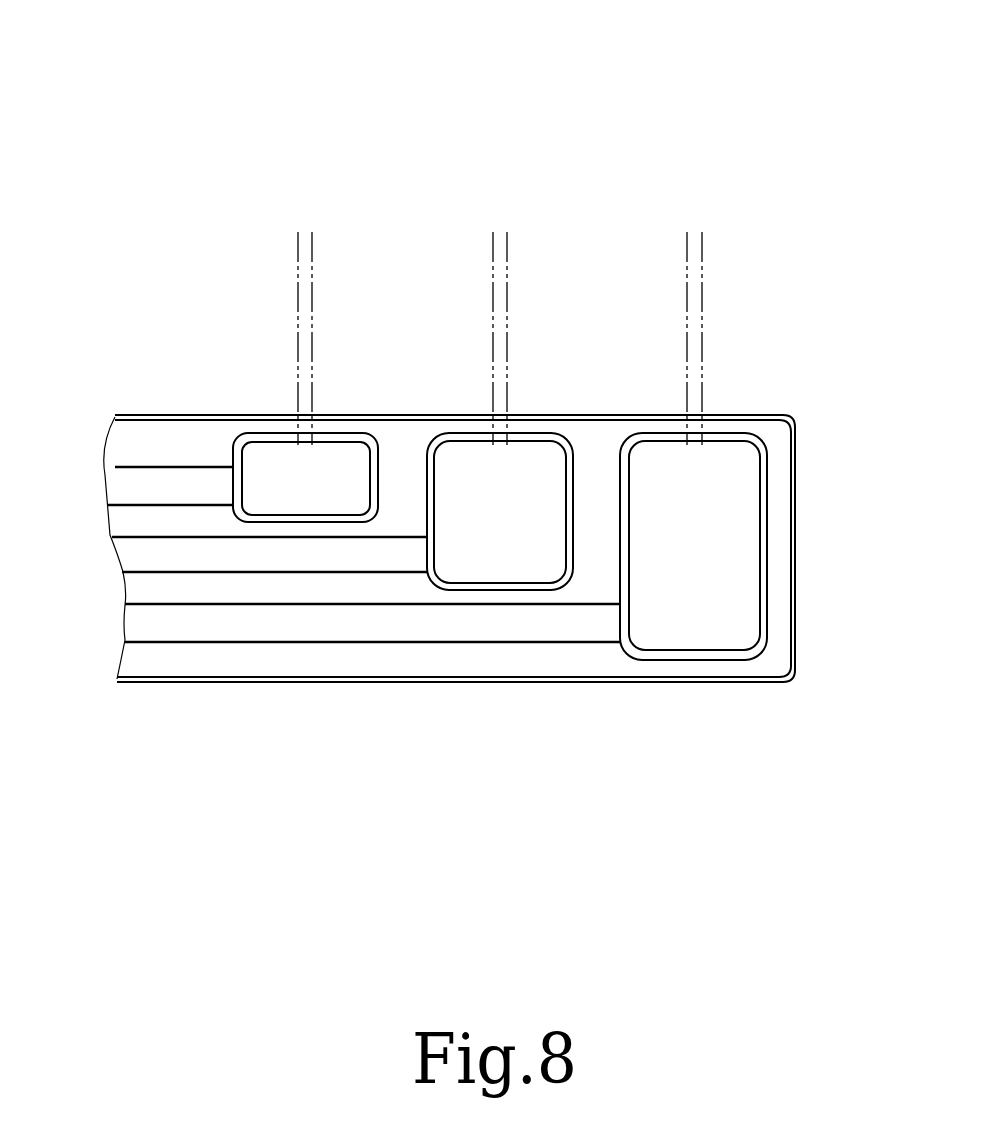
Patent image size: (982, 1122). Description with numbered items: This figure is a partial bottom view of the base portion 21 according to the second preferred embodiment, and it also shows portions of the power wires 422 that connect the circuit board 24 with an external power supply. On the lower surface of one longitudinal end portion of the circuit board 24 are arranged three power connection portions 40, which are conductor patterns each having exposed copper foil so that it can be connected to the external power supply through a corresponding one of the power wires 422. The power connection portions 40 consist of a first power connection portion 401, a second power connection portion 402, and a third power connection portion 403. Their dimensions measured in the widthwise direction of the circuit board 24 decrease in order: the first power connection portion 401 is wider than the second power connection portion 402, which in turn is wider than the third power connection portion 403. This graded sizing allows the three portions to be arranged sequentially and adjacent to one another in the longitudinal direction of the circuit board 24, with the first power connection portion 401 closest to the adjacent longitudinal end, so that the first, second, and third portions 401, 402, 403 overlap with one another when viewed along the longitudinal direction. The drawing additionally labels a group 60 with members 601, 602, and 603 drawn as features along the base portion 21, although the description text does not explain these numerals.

The base portion 21 is at (556, 134).
The circuit board 24 is at (192, 450).
The power wires 422 is at (692, 338).
The power connection portions 40 is at (500, 660).
The first power connection portion 401 is at (693, 577).
The second power connection portion 402 is at (502, 540).
The third power connection portion 403 is at (322, 478).
The channel group 60 is at (336, 688).
The first channel 601 is at (297, 627).
The second channel 602 is at (225, 557).
The third channel 603 is at (158, 490).